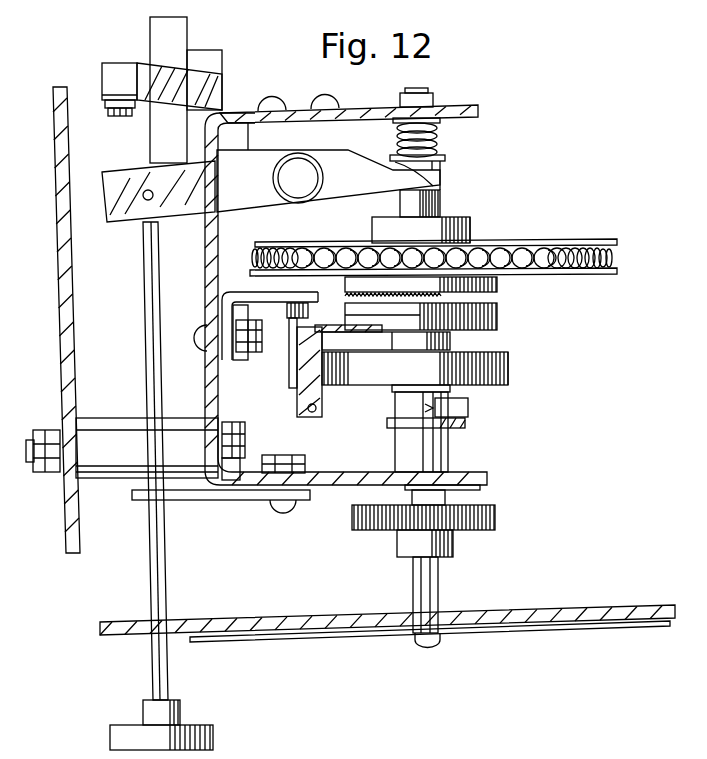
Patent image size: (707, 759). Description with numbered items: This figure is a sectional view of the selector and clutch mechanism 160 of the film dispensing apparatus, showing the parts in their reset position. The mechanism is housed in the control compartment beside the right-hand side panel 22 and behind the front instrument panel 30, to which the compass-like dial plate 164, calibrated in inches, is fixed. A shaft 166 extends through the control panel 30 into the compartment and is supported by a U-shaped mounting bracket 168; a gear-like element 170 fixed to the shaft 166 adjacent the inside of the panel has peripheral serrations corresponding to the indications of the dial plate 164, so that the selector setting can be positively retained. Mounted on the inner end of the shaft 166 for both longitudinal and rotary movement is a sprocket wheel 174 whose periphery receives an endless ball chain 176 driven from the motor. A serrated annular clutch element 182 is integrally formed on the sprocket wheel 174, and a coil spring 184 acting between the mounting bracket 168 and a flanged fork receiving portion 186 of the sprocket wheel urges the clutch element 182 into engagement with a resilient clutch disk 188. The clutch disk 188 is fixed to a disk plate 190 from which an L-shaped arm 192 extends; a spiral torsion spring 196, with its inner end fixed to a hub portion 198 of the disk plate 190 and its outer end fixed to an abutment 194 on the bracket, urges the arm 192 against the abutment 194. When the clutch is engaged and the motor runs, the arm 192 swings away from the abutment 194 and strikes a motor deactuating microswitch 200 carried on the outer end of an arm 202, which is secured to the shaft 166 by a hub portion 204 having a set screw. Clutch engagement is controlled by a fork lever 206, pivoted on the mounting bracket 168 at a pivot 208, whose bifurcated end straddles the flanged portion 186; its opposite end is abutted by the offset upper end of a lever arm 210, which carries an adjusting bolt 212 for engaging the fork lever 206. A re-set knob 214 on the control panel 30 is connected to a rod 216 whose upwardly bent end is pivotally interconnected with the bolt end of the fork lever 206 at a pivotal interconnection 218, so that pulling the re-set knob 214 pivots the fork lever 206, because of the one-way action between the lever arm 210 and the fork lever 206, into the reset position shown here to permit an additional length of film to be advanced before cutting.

The right-hand side panel 22 is at (60, 263).
The front instrument panel 30 is at (226, 622).
The mechanism 160 is at (505, 211).
The dial plate 164 is at (494, 628).
The shaft 166 is at (431, 586).
The mounting bracket 168 is at (216, 240).
The gear-like element 170 is at (362, 516).
The sprocket wheel 174 is at (508, 244).
The ball chain 176 is at (570, 275).
The clutch element 182 is at (497, 296).
The coil spring 184 is at (440, 142).
The flanged fork receiving portion 186 is at (426, 207).
The clutch disk 188 is at (496, 312).
The disk plate 190 is at (488, 331).
The L-shaped arm 192 is at (300, 394).
The abutment 194 is at (290, 378).
The spiral torsion spring 196 is at (473, 376).
The hub portion 198 is at (395, 343).
The microswitch 200 is at (466, 414).
The arm 202 is at (468, 430).
The hub portion 204 is at (406, 455).
The fork lever 206 is at (342, 195).
The pivot 208 is at (290, 177).
The lever arm 210 is at (110, 79).
The bolt 212 is at (120, 114).
The re-set knob 214 is at (212, 731).
The rod 216 is at (161, 538).
The pivotal interconnection 218 is at (148, 201).